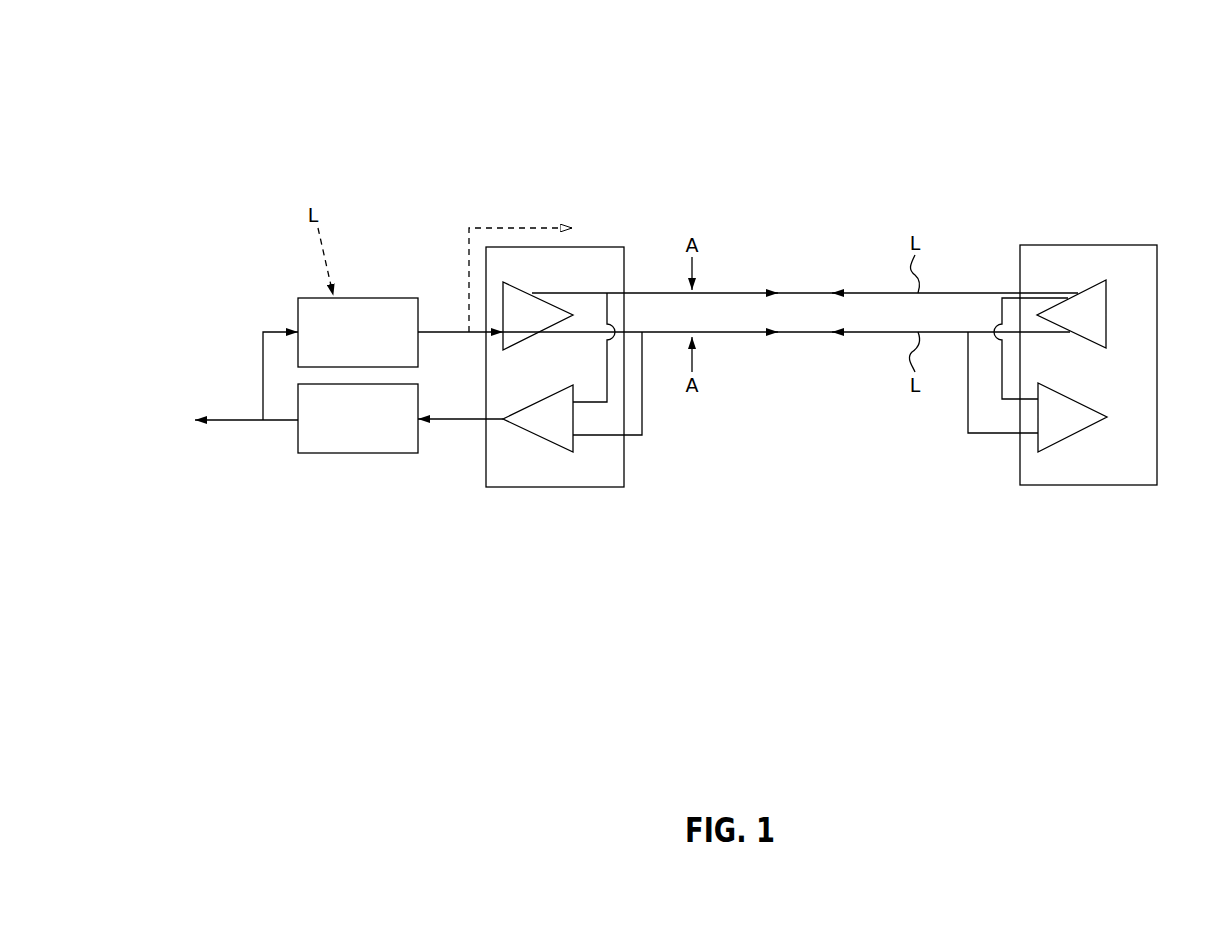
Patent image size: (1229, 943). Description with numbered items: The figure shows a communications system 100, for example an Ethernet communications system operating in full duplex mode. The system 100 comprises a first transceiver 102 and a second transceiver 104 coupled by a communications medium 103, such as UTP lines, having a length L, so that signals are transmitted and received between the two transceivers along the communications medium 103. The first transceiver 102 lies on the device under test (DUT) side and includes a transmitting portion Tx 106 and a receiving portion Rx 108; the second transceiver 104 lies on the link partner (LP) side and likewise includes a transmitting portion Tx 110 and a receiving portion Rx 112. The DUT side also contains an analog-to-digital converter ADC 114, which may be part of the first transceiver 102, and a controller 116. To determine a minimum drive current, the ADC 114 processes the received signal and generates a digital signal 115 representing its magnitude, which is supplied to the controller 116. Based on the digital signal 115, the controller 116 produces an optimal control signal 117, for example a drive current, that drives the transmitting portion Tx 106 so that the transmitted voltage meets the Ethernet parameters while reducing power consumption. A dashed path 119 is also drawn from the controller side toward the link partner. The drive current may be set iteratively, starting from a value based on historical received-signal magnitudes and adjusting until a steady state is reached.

The communications system 100 is at (1052, 136).
The first transceiver 102 is at (530, 374).
The communications medium 103 is at (813, 268).
The second transceiver 104 is at (1062, 373).
The transmitting portion Tx 106 is at (518, 288).
The receiving portion Rx 108 is at (510, 428).
The transmitting portion Tx 110 is at (1086, 284).
The receiving portion Rx 112 is at (1085, 425).
The analog-to-digital converter ADC 114 is at (350, 454).
The digital signal 115 is at (263, 347).
The controller 116 is at (380, 298).
The control signal 117 is at (434, 332).
The dashed control line to link partner 119 is at (492, 228).